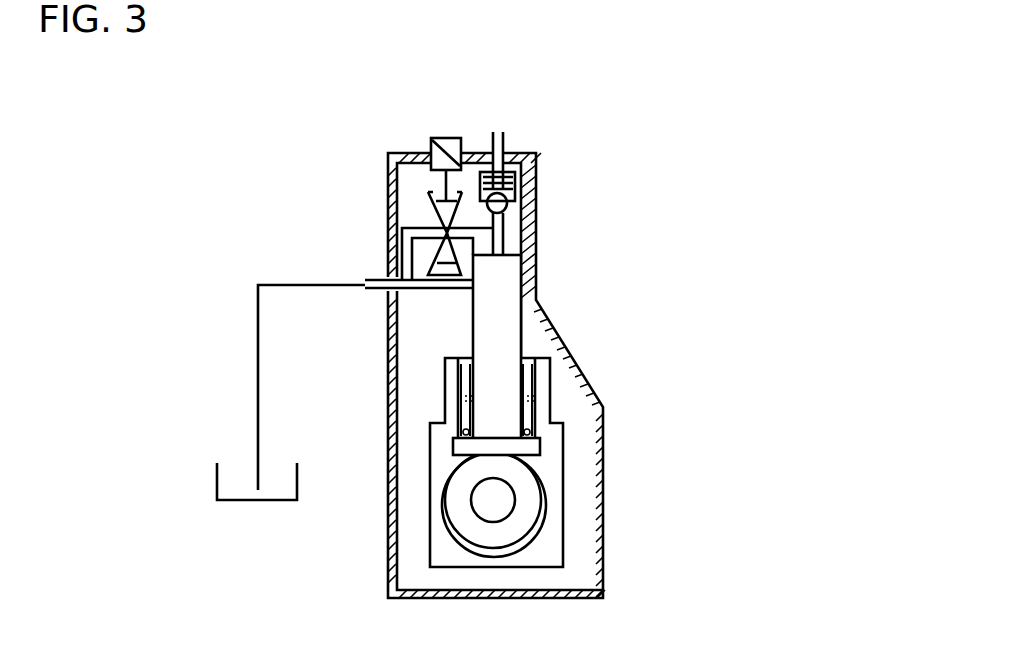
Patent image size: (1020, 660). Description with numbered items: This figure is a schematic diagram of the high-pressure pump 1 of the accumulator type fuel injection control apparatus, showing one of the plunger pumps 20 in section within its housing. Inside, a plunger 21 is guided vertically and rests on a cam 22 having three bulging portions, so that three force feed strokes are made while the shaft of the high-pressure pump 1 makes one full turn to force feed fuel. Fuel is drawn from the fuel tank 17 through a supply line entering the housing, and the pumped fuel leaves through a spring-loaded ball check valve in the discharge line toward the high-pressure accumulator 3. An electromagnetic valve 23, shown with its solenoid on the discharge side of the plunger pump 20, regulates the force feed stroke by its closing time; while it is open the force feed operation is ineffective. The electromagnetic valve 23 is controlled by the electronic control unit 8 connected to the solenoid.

The high-pressure pump 1 is at (637, 387).
The high-pressure accumulator 3 is at (497, 132).
The electronic control unit 8 is at (447, 138).
The fuel tank 17 is at (217, 478).
The plunger pump 20 is at (458, 330).
The plunger 21 is at (507, 342).
The cam 22 is at (527, 493).
The electromagnetic valve 23 is at (431, 210).